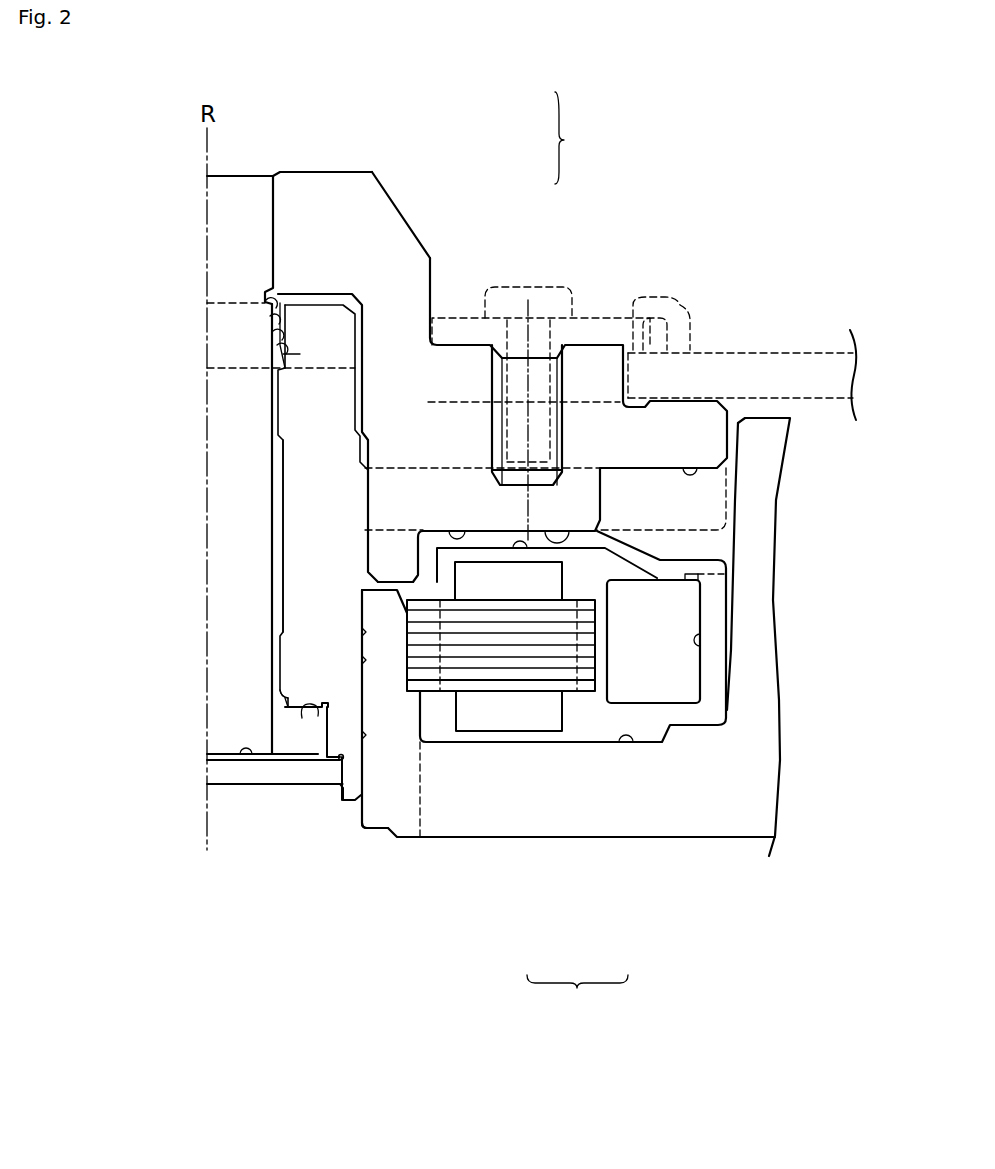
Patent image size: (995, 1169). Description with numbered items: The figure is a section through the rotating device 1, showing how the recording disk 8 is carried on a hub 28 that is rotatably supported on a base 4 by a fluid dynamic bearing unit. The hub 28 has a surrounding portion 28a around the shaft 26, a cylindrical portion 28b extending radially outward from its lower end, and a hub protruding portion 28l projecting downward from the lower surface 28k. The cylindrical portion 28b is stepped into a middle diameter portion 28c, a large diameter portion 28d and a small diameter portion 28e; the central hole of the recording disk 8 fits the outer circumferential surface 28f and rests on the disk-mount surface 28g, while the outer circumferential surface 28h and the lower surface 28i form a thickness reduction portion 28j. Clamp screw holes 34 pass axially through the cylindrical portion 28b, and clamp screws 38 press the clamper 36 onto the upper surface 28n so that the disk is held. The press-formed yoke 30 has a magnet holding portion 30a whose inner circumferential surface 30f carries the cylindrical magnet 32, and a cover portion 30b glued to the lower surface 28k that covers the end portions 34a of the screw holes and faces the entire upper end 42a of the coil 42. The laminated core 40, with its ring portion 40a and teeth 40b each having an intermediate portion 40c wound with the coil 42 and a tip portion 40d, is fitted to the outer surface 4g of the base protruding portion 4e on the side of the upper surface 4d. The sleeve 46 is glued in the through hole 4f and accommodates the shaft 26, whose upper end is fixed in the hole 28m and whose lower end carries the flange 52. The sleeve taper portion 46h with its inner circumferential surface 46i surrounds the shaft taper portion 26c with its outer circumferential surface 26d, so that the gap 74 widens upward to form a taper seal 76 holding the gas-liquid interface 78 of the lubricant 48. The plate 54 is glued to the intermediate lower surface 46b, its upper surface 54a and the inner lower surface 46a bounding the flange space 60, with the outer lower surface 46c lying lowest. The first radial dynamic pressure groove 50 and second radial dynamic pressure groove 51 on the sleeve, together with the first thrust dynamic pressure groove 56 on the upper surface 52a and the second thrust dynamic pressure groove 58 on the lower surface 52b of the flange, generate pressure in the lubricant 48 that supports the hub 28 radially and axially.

The rotating device 1 is at (458, 1073).
The base 4 is at (740, 820).
The upper surface of the base 4d is at (633, 740).
The base protruding portion 4e is at (398, 797).
The through hole 4f is at (380, 750).
The outer surface of the base protruding portion 4g is at (417, 662).
The recording disk 8 is at (772, 353).
The shaft 26 is at (222, 200).
The shaft taper portion 26c is at (220, 358).
The outer circumferential surface of the shaft taper portion 26d is at (268, 312).
The hub 28 is at (336, 193).
The surrounding portion 28a is at (361, 232).
The cylindrical portion 28b is at (588, 138).
The middle diameter portion 28c is at (447, 373).
The large diameter portion 28d is at (460, 437).
The small diameter portion 28e is at (470, 483).
The outer circumferential surface of the middle diameter portion 28f is at (638, 372).
The disk-mount surface 28g is at (667, 300).
The outer circumferential surface of the small diameter portion 28h is at (603, 496).
The lower surface of the large diameter portion 28i is at (701, 470).
The thickness reduction portion 28j is at (697, 514).
The lower surface of the cylindrical portion 28k is at (446, 531).
The hub protruding portion 28l is at (387, 558).
The hole 28m is at (275, 205).
The upper surface of the cylindrical portion 28n is at (628, 368).
The yoke 30 is at (713, 607).
The magnet holding portion 30a is at (713, 658).
The cover portion 30b is at (593, 543).
The inner circumferential surface of the magnet holding portion 30f is at (688, 640).
The cylindrical magnet 32 is at (647, 680).
The clamp screw holes 34 is at (540, 385).
The end portions of the clamp screw holes 34a is at (570, 530).
The clamper 36 is at (612, 343).
The clamp screws 38 is at (519, 292).
The laminated core 40 is at (462, 660).
The ring portion 40a is at (425, 672).
The teeth 40b is at (577, 994).
The intermediate portion 40c is at (548, 693).
The tip portion 40d is at (588, 693).
The coil 42 is at (487, 577).
The upper end of the coil 42a is at (521, 557).
The sleeve 46 is at (306, 325).
The inner lower surface 46a is at (315, 718).
The intermediate lower surface 46b is at (330, 760).
The outer lower surface 46c is at (352, 807).
The sleeve taper portion 46h is at (324, 325).
The inner circumferential surface of the sleeve taper portion 46i is at (283, 354).
The lubricant 48 is at (281, 347).
The first radial dynamic pressure groove 50 is at (275, 412).
The second radial dynamic pressure groove 51 is at (276, 651).
The flange 52 is at (290, 715).
The upper surface of the flange 52a is at (192, 686).
The lower surface of the flange 52b is at (308, 878).
The plate 54 is at (225, 770).
The upper surface of the plate 54a is at (252, 747).
The first thrust dynamic pressure groove 56 is at (287, 683).
The second thrust dynamic pressure groove 58 is at (283, 940).
The flange space 60 is at (262, 739).
The gap 74 is at (265, 300).
The taper seal 76 is at (273, 340).
The gas-liquid interface 78 is at (268, 328).